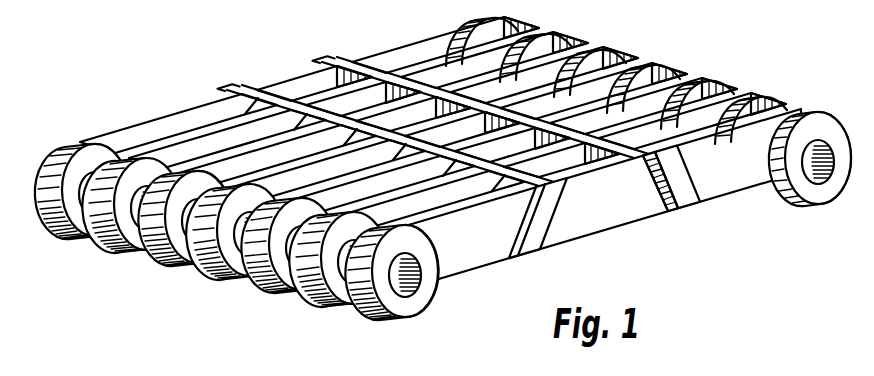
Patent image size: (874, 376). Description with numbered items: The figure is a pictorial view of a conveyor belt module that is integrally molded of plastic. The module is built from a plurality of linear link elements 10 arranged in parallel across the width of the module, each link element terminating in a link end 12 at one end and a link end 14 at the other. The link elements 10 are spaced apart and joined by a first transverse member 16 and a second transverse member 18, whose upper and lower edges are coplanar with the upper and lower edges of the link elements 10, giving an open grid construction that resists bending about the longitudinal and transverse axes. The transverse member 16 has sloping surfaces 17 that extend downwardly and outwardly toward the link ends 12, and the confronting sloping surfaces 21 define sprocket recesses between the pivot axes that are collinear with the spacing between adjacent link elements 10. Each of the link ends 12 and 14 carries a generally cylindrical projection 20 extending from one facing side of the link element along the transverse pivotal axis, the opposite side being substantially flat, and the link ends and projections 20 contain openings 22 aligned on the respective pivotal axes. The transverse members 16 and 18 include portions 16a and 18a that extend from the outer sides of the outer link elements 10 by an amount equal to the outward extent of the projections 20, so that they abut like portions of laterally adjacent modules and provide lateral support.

The linear link element 10 is at (483, 260).
The link end 12 is at (343, 303).
The link end 14 is at (834, 180).
The first transverse member 16 is at (270, 100).
The portion of transverse member 16a is at (548, 250).
The sloping surface 17 is at (226, 92).
The second transverse member 18 is at (368, 70).
The portion of transverse member 18a is at (692, 195).
The cylindrical projection 20 is at (388, 313).
The confronting sloping surface 21 is at (657, 197).
The opening 22 is at (414, 287).